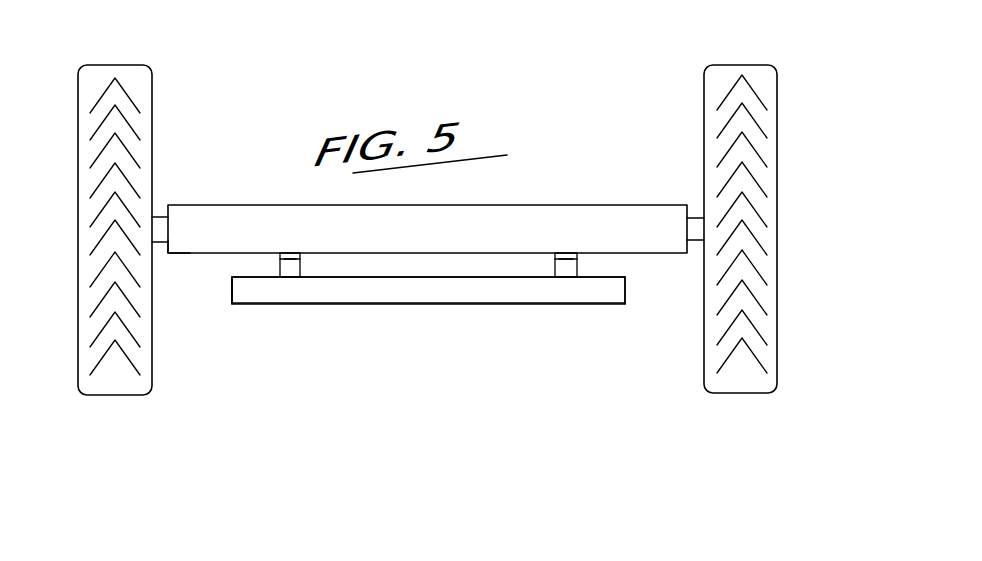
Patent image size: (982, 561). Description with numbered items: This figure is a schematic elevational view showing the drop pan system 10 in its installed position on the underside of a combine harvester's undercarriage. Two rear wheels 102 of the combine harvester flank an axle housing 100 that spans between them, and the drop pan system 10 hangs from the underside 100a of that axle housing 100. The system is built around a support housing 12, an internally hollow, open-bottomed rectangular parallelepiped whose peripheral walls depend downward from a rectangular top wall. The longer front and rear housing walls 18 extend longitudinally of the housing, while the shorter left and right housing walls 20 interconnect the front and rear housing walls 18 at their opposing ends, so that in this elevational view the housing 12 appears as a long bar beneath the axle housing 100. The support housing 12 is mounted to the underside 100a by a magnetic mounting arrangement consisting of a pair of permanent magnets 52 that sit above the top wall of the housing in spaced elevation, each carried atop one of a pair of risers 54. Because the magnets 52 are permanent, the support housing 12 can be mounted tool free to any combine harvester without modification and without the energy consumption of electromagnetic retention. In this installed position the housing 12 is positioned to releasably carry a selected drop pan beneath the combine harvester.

The drop pan system 10 is at (458, 308).
The support housing 12 is at (357, 303).
The front and rear housing walls 18 is at (418, 297).
The left and right housing walls 20 is at (226, 296).
The permanent magnets 52 is at (296, 258).
The risers 54 is at (293, 262).
The axle housing 100 is at (513, 218).
The underside of the axle housing 100a is at (224, 256).
The rear wheels 102 is at (125, 145).